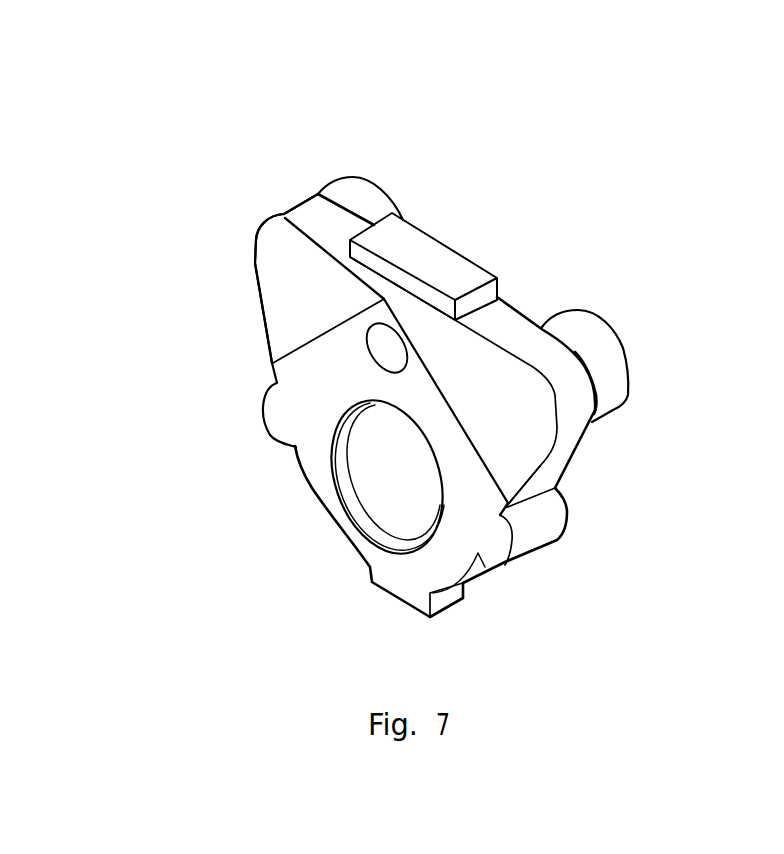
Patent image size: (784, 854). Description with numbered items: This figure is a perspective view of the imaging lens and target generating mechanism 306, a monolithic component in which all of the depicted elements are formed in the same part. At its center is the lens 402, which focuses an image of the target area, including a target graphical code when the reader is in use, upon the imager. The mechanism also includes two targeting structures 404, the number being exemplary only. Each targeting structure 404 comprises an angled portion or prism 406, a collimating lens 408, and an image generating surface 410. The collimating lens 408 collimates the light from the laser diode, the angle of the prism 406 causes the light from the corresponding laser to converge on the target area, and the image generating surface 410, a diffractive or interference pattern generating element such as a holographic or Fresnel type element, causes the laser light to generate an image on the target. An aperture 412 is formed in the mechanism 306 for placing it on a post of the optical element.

The imaging lens and target generating mechanism 306 is at (579, 210).
The lens 402 is at (380, 489).
The targeting structure 404 is at (245, 205).
The prism 406 is at (272, 278).
The collimating lens 408 is at (321, 193).
The image generating surface 410 is at (385, 195).
The aperture 412 is at (388, 343).